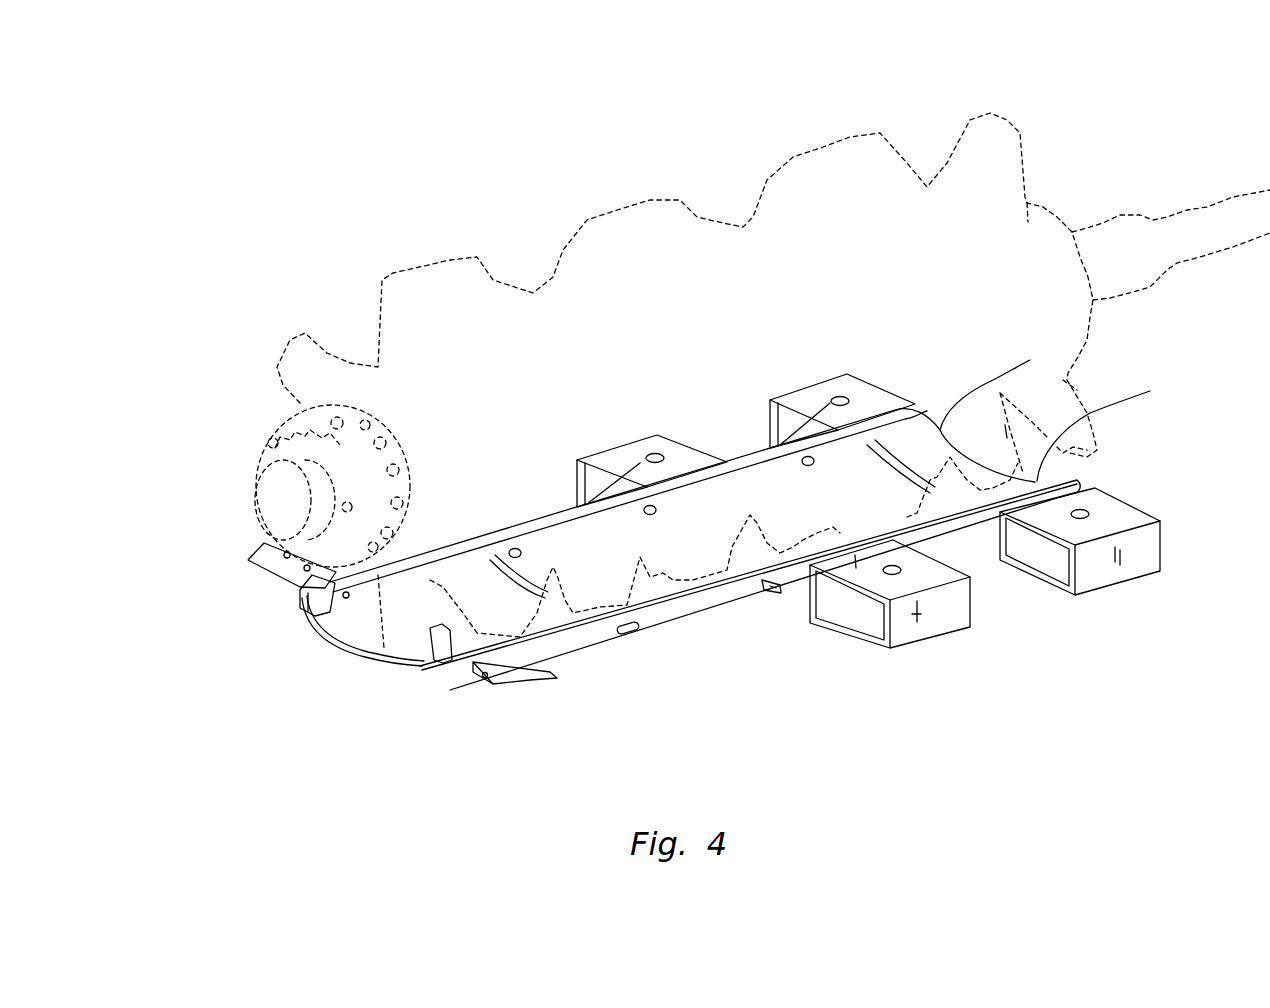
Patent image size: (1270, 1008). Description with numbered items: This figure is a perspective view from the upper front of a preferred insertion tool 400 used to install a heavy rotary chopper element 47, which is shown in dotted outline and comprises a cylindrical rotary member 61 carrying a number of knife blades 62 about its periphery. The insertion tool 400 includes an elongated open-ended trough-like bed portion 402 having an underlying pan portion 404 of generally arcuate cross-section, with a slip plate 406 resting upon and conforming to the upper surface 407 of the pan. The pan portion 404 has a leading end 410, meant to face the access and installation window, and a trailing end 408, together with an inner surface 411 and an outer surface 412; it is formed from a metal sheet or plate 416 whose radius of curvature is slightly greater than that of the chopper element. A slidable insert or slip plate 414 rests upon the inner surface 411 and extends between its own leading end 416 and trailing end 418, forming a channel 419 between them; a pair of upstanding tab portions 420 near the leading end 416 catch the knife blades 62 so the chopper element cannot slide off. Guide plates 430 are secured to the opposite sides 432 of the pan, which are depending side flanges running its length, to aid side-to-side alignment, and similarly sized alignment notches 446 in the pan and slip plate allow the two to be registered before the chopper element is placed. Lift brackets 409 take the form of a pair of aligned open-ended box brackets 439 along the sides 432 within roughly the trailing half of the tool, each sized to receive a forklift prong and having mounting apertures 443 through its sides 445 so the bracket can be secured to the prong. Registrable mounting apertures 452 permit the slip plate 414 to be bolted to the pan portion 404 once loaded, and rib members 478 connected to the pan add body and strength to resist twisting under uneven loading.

The rotary chopper element 47 is at (826, 143).
The rotary member 61 is at (642, 250).
The knife blades 62 is at (995, 135).
The insertion tool 400 is at (390, 723).
The bed portion 402 is at (447, 673).
The pan portion 404 is at (393, 667).
The slip plate 406 is at (313, 617).
The upper surface 407 is at (430, 545).
The trailing end 408 is at (995, 380).
The lift brackets 409 is at (843, 396).
The leading end 410 is at (333, 627).
The inner surface 411 is at (350, 650).
The outer surface 412 is at (360, 660).
The slip plate 414 is at (556, 508).
The leading end of slip plate 416 is at (347, 643).
The trailing end of slip plate 418 is at (1119, 425).
The channel 419 is at (687, 570).
The tab portions 420 is at (342, 612).
The guide plates 430 is at (253, 543).
The sides 432 is at (297, 587).
The box brackets 439 is at (662, 434).
The mounting apertures 443 is at (880, 373).
The sides of box brackets 445 is at (1037, 560).
The alignment notches 446 is at (377, 660).
The mounting apertures 452 is at (522, 556).
The rib members 478 is at (800, 560).